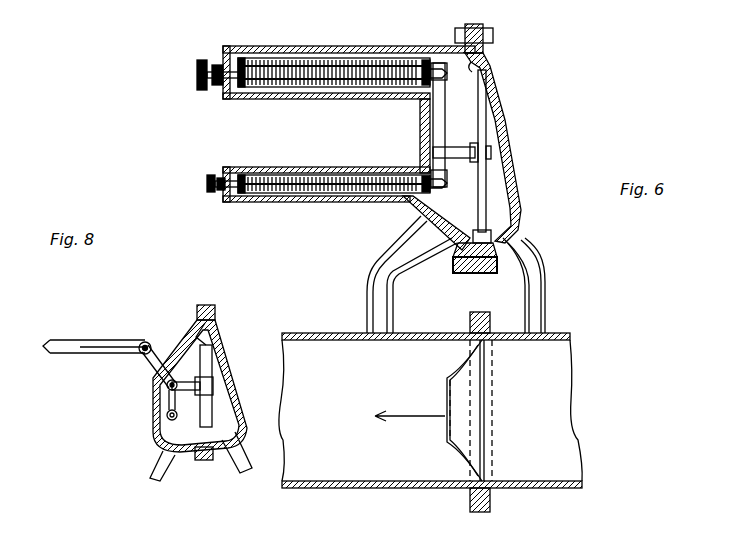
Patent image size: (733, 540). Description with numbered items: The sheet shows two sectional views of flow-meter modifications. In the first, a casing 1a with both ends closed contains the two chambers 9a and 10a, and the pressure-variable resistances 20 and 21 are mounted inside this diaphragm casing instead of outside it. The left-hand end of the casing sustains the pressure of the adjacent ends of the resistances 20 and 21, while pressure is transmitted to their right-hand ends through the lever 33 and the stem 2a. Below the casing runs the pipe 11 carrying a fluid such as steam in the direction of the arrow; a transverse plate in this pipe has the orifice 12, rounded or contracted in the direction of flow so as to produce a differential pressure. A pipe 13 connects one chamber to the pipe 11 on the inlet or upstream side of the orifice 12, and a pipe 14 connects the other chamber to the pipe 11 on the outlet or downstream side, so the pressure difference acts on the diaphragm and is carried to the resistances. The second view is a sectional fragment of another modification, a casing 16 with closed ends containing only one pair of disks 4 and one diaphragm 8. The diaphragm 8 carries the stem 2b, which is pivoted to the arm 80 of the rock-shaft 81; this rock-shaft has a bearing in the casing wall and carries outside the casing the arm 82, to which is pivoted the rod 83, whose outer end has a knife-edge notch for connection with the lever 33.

In FIG. 6, the casing 1a is at (505, 148).
In FIG. 6, the stem 2a is at (462, 143).
In FIG. 6, the chamber 9a is at (497, 202).
In FIG. 6, the chamber 10a is at (450, 234).
In FIG. 6, the pipe 11 is at (430, 412).
In FIG. 6, the orifice 12 is at (458, 392).
In FIG. 6, the pipe 13 is at (546, 275).
In FIG. 8, the pipe 13 is at (237, 450).
In FIG. 6, the pipe 14 is at (385, 281).
In FIG. 8, the pipe 14 is at (167, 478).
In FIG. 6, the pressure-variable resistance 20 is at (312, 88).
In FIG. 6, the pressure-variable resistance 21 is at (296, 180).
In FIG. 6, the lever 33 is at (445, 103).
In FIG. 8, the disks 4 is at (212, 358).
In FIG. 8, the diaphragm 8 is at (202, 333).
In FIG. 8, the stem 2b is at (192, 377).
In FIG. 8, the housing 16 is at (240, 406).
In FIG. 8, the arm 80 is at (168, 402).
In FIG. 8, the rock-shaft 81 is at (165, 417).
In FIG. 8, the arm 82 is at (153, 369).
In FIG. 8, the rod 83 is at (104, 340).